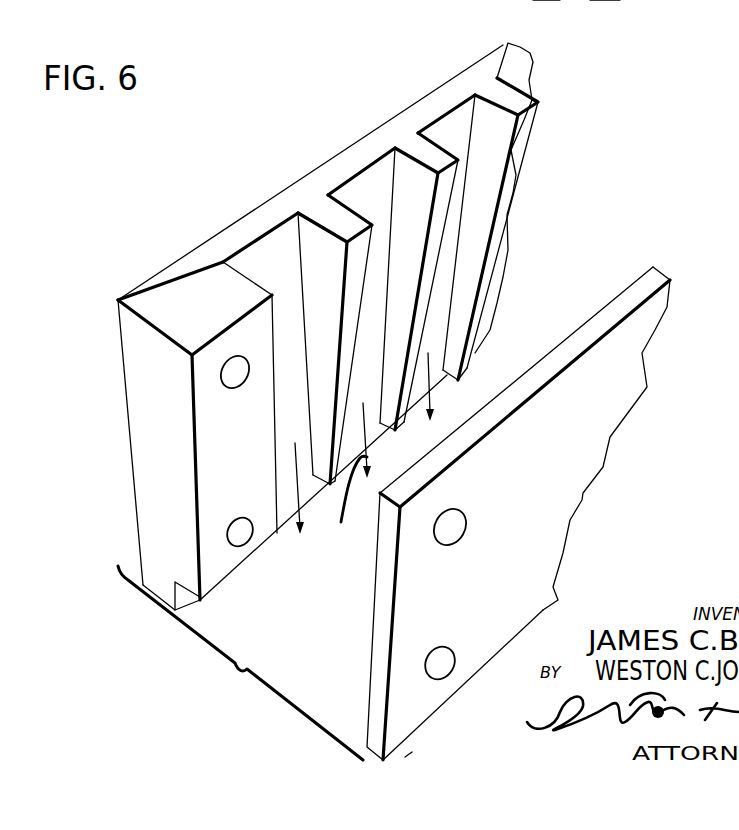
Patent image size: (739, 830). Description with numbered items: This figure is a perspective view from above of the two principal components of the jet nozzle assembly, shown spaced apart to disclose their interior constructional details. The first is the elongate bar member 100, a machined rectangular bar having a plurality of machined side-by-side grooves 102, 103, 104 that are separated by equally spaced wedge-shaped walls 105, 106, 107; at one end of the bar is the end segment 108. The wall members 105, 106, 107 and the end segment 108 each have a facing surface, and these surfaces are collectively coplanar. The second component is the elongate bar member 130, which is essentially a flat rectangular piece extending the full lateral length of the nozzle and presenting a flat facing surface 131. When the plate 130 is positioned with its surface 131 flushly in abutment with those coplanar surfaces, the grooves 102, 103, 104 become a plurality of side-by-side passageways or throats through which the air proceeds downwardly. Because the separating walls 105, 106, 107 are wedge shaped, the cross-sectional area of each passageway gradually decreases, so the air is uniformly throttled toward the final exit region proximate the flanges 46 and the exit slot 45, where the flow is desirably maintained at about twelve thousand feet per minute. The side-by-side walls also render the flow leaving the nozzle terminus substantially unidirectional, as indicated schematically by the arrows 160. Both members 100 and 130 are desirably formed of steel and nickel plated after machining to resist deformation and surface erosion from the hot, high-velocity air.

The elongate bar member 100 is at (111, 352).
The groove 102 is at (260, 263).
The groove 103 is at (353, 198).
The groove 104 is at (453, 130).
The wedge-shaped wall 105 is at (315, 207).
The wedge-shaped wall 106 is at (417, 147).
The wedge-shaped wall 107 is at (500, 90).
The end segment 108 is at (258, 425).
The elongate bar member 130 is at (567, 457).
The flat facing surface 131 is at (575, 314).
The arrows 160 is at (302, 513).
The exit slot 45 is at (546, 12).
The elongate L-shaped members 46 is at (605, 6).